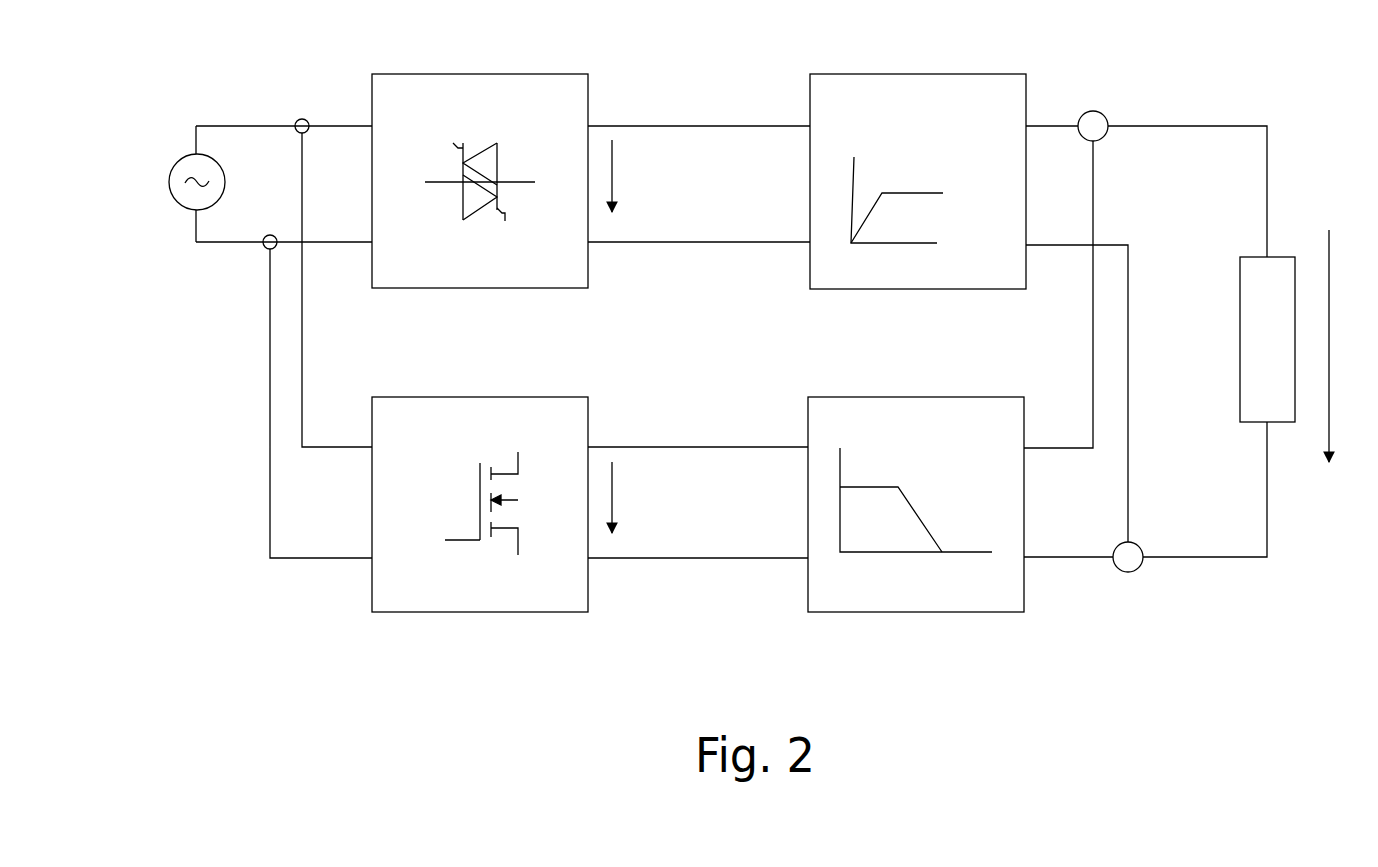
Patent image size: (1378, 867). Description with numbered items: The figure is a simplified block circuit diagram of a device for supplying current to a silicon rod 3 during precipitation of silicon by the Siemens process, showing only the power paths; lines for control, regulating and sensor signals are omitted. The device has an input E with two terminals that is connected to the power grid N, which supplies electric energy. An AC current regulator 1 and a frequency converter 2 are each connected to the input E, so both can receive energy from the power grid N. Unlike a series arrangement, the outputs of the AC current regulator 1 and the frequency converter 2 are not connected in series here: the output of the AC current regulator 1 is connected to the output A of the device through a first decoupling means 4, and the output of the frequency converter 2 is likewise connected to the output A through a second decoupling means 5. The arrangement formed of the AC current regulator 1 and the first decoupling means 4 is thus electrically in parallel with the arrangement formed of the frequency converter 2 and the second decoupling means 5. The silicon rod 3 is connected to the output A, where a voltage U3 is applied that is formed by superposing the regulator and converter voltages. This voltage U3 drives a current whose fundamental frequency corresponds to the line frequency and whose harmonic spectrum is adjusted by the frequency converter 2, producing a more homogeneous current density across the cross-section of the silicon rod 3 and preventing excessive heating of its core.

The AC current regulator 1 is at (527, 92).
The frequency converter 2 is at (503, 595).
The silicon rod 3 is at (1278, 250).
The first decoupling means 4 is at (957, 93).
The second decoupling means 5 is at (930, 592).
The input E is at (297, 121).
The output A is at (1103, 115).
The power grid N is at (168, 180).
The voltage U3 is at (1347, 346).